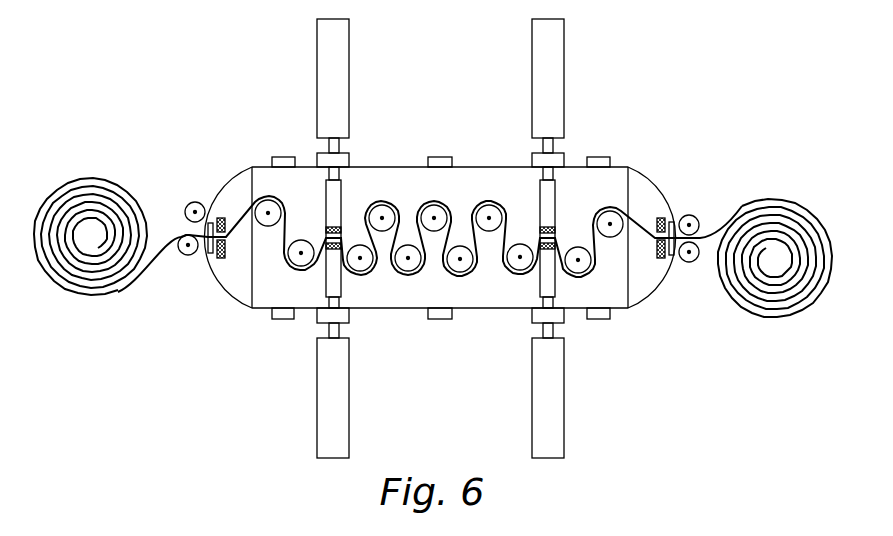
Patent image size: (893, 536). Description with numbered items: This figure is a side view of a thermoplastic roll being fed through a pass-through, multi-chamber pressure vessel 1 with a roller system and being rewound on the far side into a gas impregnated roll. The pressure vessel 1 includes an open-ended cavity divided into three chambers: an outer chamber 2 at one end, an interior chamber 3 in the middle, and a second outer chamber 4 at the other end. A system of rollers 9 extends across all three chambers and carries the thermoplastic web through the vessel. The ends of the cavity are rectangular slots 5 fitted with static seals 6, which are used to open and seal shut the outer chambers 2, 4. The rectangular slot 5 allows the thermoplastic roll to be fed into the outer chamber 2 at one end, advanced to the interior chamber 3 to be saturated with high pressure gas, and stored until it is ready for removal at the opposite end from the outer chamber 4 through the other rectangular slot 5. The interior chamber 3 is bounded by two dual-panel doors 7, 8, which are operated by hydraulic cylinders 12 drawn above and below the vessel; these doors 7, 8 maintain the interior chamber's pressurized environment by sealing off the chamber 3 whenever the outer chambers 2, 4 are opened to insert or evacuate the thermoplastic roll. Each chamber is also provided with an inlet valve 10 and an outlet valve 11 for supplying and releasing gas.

The pressure vessel 1 is at (642, 172).
The outer chamber 2 is at (578, 197).
The interior chamber 3 is at (438, 194).
The outer chamber 4 is at (291, 199).
The rectangular slot 5 is at (210, 256).
The static seal 6 is at (222, 217).
The dual-panel door 7 is at (538, 291).
The dual-panel door 8 is at (347, 290).
The system of rollers 9 is at (403, 271).
The inlet valve 10 is at (278, 157).
The outlet valve 11 is at (280, 319).
The actuating cylinder 12 is at (323, 84).